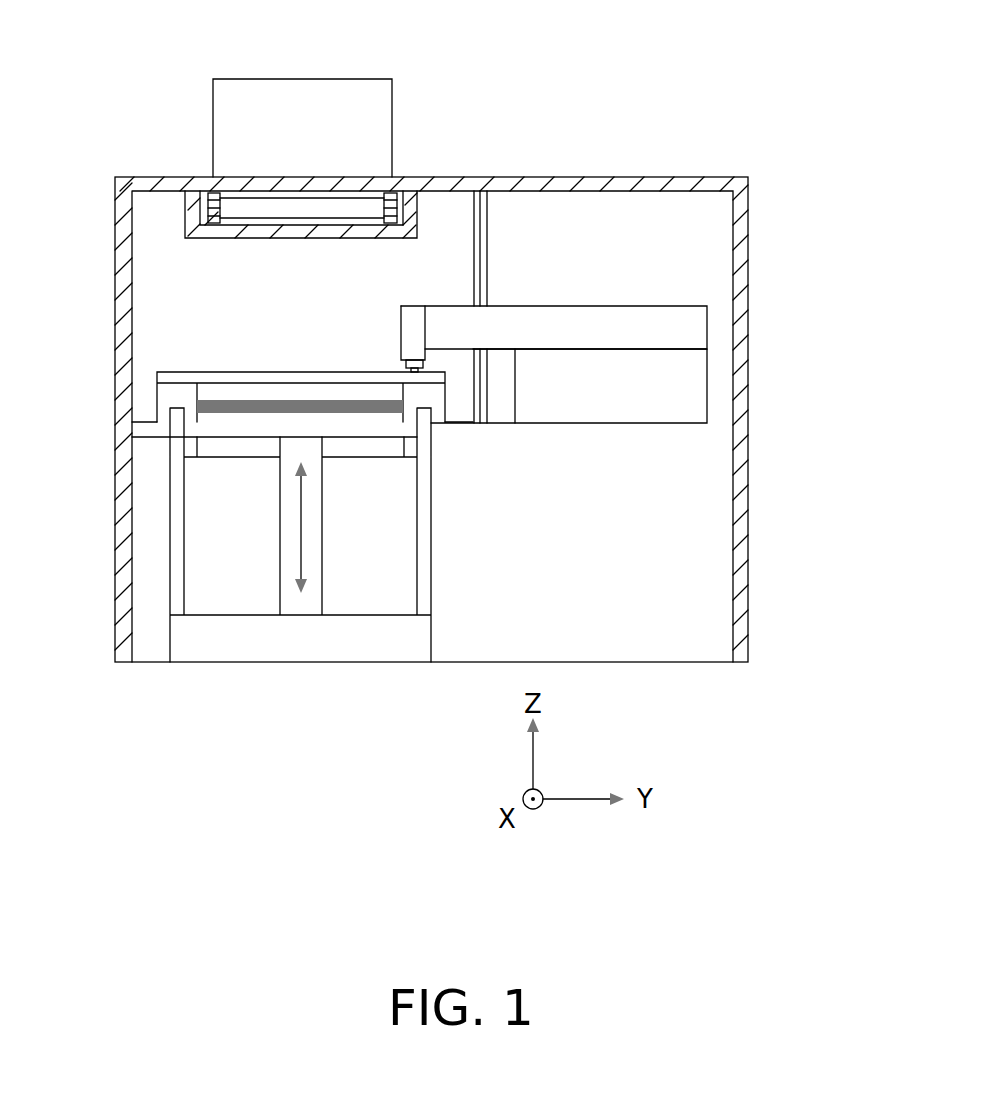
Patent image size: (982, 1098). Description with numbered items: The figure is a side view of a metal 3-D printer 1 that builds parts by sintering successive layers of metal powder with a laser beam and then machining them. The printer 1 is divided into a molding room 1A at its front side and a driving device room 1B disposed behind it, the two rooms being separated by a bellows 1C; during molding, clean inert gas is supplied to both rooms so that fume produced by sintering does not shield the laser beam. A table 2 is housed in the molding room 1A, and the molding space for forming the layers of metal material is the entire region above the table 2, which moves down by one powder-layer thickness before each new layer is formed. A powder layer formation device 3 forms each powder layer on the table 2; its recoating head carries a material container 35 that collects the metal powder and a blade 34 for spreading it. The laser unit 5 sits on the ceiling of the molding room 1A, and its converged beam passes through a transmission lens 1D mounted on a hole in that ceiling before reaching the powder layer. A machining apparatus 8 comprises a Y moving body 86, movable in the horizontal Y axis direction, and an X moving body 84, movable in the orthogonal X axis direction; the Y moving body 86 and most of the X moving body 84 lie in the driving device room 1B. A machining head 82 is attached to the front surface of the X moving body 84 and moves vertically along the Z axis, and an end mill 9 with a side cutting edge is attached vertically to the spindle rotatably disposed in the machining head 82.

The metal 3-D printer 1 is at (478, 361).
The molding room 1A is at (158, 207).
The driving device room 1B is at (712, 225).
The bellows 1C is at (485, 243).
The transmission lens 1D is at (307, 180).
The table 2 is at (205, 430).
The powder layer formation device 3 is at (267, 460).
The drive unit 5 is at (271, 100).
The machining apparatus 8 is at (575, 313).
The end mill 9 is at (398, 368).
The blade 34 is at (246, 398).
The material container 35 is at (222, 380).
The machining head 82 is at (418, 318).
The X moving body 84 is at (554, 327).
The Y moving body 86 is at (569, 386).